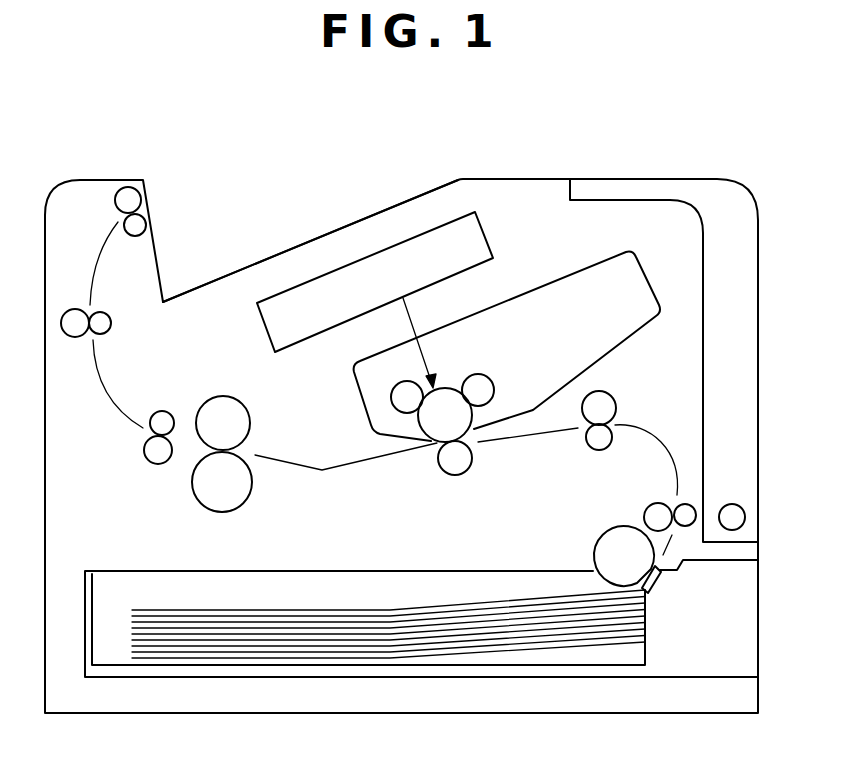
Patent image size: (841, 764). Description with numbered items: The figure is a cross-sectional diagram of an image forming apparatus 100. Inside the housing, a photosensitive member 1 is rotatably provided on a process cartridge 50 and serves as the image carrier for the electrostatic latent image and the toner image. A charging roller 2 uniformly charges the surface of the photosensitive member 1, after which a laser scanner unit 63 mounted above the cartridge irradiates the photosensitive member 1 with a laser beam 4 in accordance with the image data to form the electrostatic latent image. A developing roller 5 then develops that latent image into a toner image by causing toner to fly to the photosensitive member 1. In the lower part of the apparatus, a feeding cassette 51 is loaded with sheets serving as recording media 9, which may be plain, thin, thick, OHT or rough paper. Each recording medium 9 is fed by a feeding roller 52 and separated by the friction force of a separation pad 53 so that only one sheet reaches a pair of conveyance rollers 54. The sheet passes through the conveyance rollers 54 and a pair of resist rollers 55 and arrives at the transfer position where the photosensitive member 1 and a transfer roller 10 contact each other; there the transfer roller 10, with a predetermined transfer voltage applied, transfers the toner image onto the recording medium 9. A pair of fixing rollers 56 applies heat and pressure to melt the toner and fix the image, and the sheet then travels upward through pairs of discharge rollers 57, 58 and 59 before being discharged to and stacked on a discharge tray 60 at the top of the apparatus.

The image forming apparatus 100 is at (95, 180).
The pair of discharge rollers 59 is at (141, 195).
The discharge tray 60 is at (266, 260).
The laser scanner unit 63 is at (486, 250).
The process cartridge 50 is at (597, 280).
The laser beam 4 is at (414, 326).
The charging roller 2 is at (401, 402).
The developing roller 5 is at (490, 392).
The photosensitive member 1 is at (437, 436).
The transfer roller 10 is at (465, 463).
The pair of resist rollers 55 is at (617, 397).
The pair of fixing rollers 56 is at (220, 410).
The pair of discharge rollers 58 is at (75, 330).
The pair of discharge rollers 57 is at (156, 460).
The pair of conveyance rollers 54 is at (650, 514).
The feeding roller 52 is at (598, 556).
The separation pad 53 is at (660, 588).
The feeding cassette 51 is at (306, 568).
The recording medium 9 is at (204, 620).